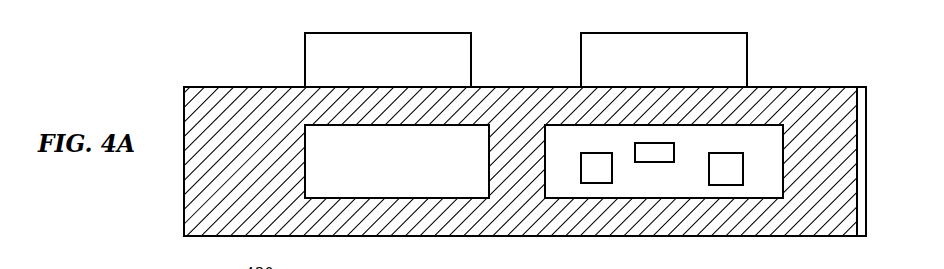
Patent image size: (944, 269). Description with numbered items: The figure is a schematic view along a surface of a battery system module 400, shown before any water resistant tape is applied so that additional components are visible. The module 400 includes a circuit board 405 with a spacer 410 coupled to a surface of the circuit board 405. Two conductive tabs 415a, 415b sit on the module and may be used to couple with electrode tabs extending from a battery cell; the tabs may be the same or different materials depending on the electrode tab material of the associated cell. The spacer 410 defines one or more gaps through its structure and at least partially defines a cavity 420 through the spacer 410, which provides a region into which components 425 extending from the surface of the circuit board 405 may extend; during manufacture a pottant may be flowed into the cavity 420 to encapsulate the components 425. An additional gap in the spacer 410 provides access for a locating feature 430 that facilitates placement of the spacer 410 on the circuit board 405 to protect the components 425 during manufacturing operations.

The battery system module 400 is at (160, 77).
The circuit board 405 is at (862, 87).
The spacer 410 is at (775, 87).
The conductive tab 415a is at (305, 62).
The conductive tab 415b is at (581, 62).
The cavity 420 is at (750, 199).
The components 425 is at (594, 186).
The feature 430 is at (413, 199).